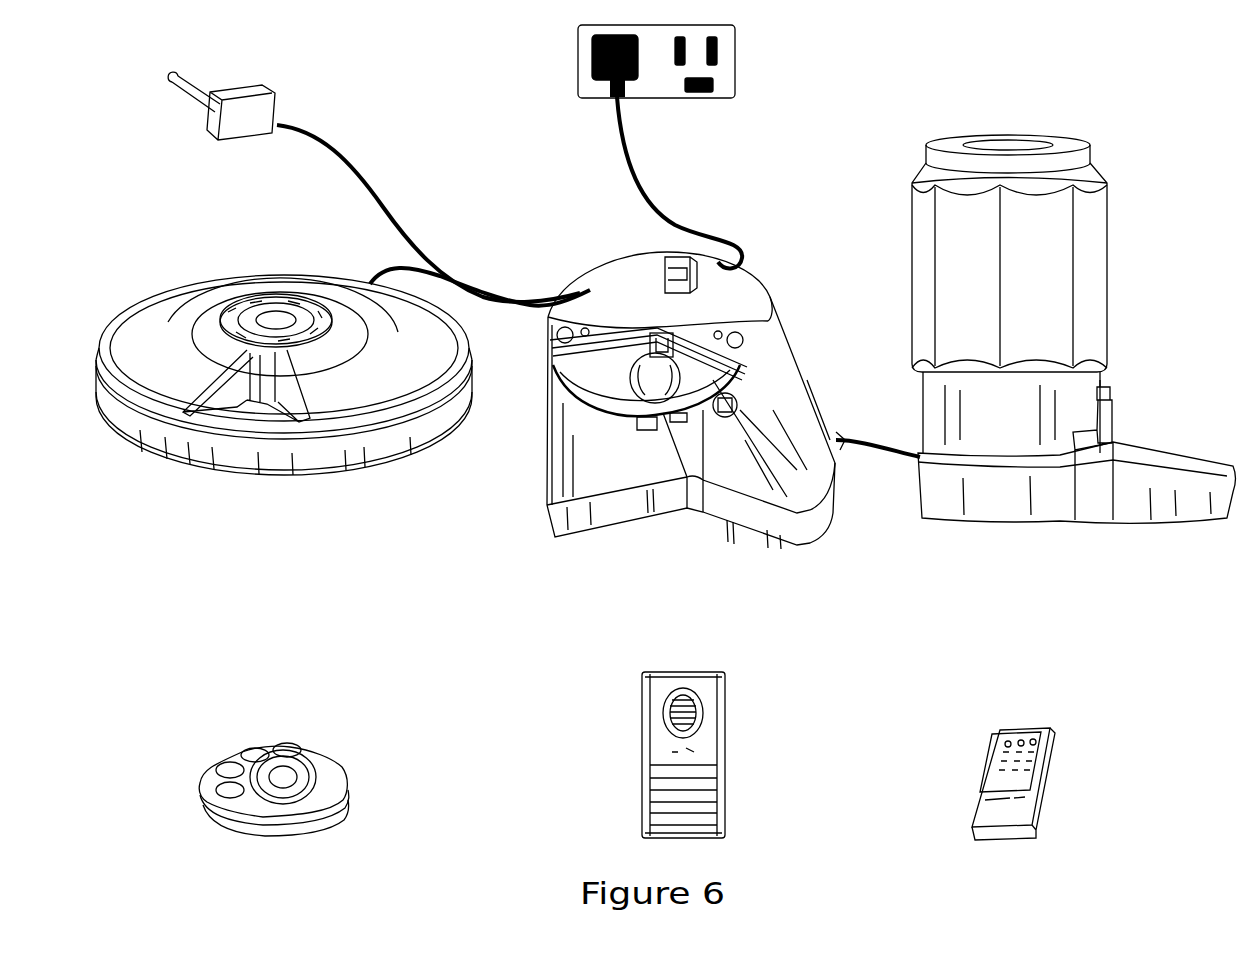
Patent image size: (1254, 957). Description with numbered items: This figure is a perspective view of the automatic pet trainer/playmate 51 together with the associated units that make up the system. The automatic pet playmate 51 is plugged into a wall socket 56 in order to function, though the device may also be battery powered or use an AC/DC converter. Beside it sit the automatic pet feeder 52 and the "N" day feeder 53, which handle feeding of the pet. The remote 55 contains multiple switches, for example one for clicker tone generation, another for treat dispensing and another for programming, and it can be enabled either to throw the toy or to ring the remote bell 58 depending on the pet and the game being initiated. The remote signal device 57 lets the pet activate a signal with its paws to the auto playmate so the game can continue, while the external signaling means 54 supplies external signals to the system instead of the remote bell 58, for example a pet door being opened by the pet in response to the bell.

The automatic pet trainer/playmate 51 is at (704, 512).
The automatic pet feeder 52 is at (1056, 520).
The "N" day feeder 53 is at (261, 480).
The external signaling means 54 is at (243, 138).
The remote 55 is at (1047, 785).
The wall socket 56 is at (578, 60).
The remote signal device 57 is at (350, 780).
The remote bell 58 is at (720, 782).